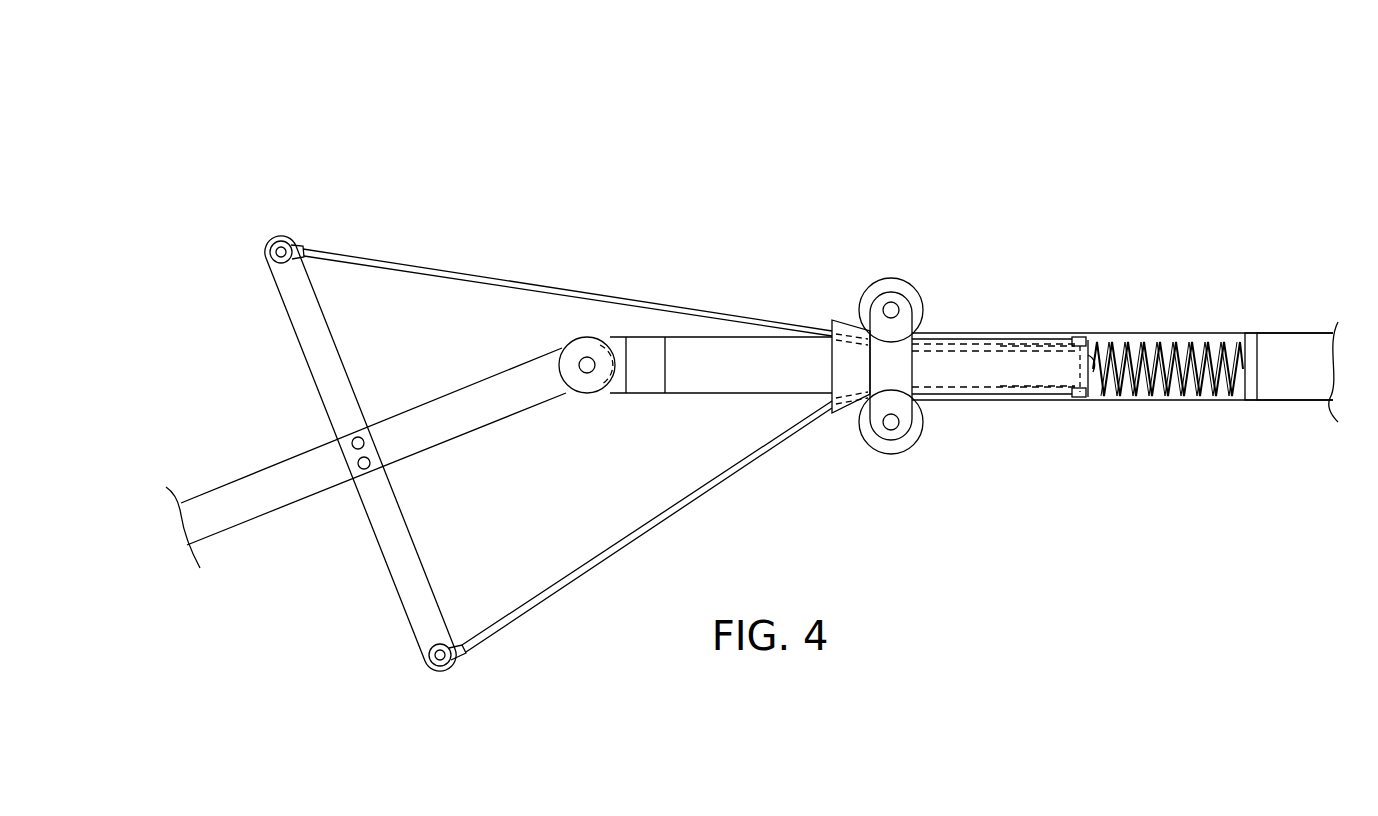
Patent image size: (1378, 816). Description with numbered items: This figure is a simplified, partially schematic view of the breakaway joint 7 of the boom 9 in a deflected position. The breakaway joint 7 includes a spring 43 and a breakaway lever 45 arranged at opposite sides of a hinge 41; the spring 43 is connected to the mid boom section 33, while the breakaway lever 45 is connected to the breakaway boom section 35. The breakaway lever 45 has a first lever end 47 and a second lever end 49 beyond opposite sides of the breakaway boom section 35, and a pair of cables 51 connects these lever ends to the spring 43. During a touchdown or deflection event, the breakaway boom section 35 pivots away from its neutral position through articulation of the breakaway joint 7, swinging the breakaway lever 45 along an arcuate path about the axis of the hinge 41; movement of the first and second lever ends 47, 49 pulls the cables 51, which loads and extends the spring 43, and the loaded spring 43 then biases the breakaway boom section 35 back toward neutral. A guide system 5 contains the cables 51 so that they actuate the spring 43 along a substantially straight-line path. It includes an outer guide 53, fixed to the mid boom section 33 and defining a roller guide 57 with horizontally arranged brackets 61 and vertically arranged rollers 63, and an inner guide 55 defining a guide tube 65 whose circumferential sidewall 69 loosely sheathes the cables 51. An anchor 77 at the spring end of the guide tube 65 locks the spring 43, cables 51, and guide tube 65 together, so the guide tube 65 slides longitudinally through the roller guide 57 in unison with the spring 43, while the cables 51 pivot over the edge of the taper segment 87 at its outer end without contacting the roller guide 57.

The guide system 5 is at (876, 210).
The breakaway joint 7 is at (628, 236).
The boom 9 is at (1136, 124).
The mid boom section 33 is at (1292, 437).
The breakaway boom section 35 is at (188, 478).
The hinge 41 is at (553, 340).
The spring 43 is at (1215, 313).
The breakaway lever 45 is at (297, 394).
The first lever end 47 is at (278, 242).
The second lever end 49 is at (437, 682).
The cable 51 is at (409, 268).
The outer guide 53 is at (930, 247).
The inner guide 55 is at (1010, 285).
The roller guide 57 is at (903, 280).
The bracket 61 is at (902, 301).
The roller 63 is at (868, 294).
The guide tube 65 is at (978, 400).
The circumferential sidewall 69 is at (1040, 385).
The anchor 77 is at (1098, 340).
The taper segment 87 is at (840, 420).